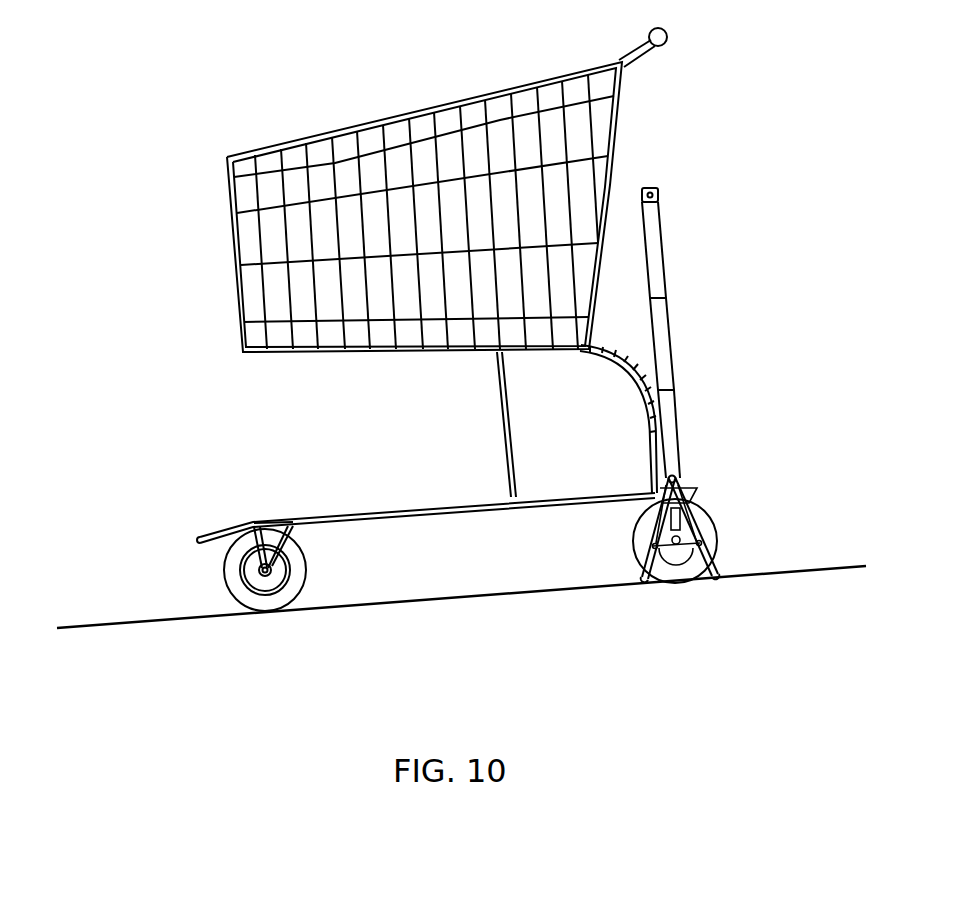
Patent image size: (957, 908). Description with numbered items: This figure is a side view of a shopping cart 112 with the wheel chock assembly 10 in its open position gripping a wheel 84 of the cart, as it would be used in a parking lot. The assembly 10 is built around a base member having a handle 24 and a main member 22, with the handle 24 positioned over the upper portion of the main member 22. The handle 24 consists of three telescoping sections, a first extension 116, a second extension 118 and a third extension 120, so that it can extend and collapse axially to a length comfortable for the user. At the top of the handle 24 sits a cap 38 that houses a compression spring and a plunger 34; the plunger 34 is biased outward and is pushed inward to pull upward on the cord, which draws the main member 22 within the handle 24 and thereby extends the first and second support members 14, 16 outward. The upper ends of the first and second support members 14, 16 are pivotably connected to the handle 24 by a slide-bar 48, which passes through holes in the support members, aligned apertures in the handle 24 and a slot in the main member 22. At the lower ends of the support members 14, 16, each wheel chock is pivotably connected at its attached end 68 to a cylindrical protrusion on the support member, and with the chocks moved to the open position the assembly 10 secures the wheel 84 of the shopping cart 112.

The wheel chock assembly 10 is at (735, 360).
The first support member 14 is at (714, 563).
The second support member 16 is at (637, 575).
The main member 22 is at (677, 520).
The handle 24 is at (660, 281).
The plunger 34 is at (656, 200).
The cap 38 is at (658, 189).
The slide-bar 48 is at (676, 477).
The attached end 68 is at (727, 575).
The wheel 84 is at (673, 572).
The shopping cart 112 is at (537, 82).
The first extension 116 is at (655, 250).
The second extension 118 is at (663, 345).
The third extension 120 is at (668, 438).